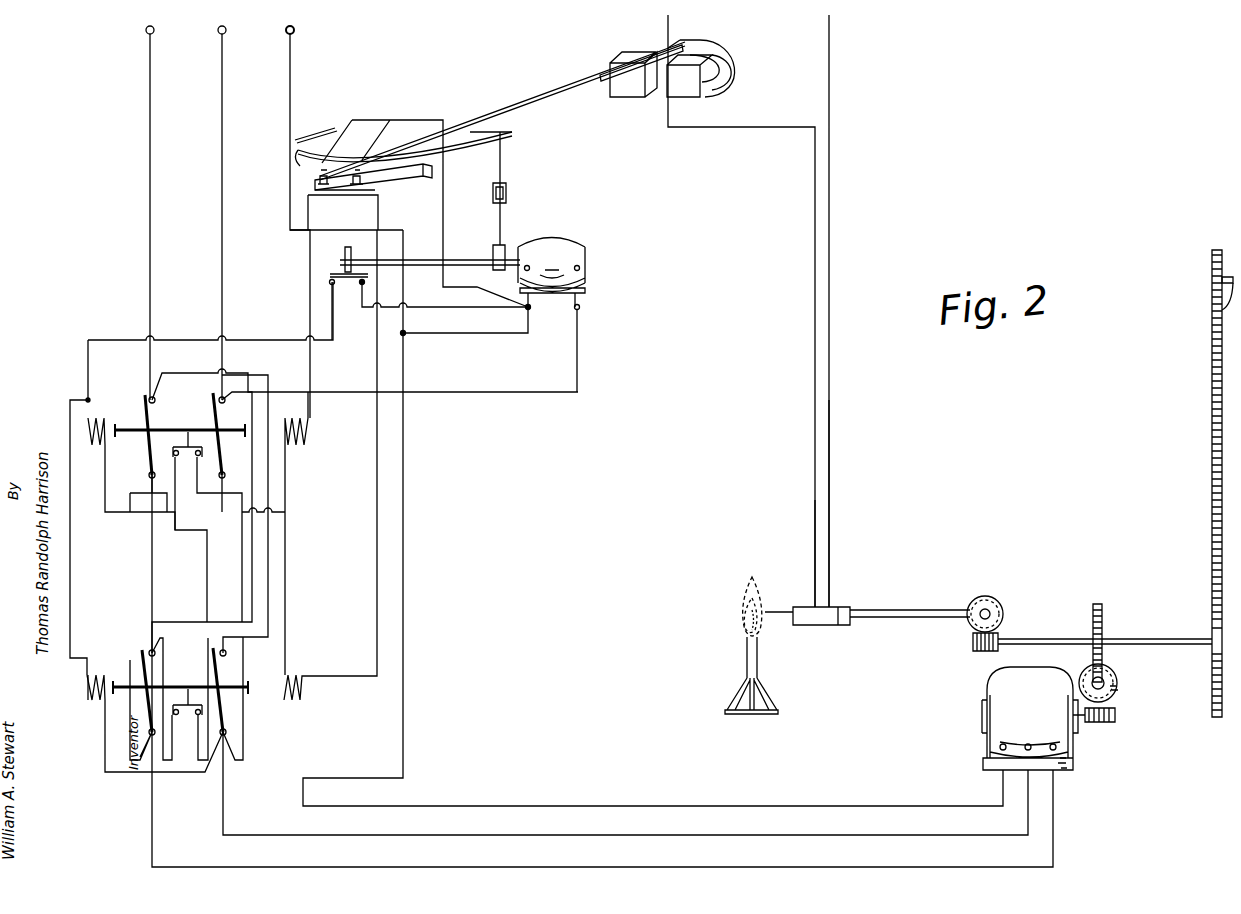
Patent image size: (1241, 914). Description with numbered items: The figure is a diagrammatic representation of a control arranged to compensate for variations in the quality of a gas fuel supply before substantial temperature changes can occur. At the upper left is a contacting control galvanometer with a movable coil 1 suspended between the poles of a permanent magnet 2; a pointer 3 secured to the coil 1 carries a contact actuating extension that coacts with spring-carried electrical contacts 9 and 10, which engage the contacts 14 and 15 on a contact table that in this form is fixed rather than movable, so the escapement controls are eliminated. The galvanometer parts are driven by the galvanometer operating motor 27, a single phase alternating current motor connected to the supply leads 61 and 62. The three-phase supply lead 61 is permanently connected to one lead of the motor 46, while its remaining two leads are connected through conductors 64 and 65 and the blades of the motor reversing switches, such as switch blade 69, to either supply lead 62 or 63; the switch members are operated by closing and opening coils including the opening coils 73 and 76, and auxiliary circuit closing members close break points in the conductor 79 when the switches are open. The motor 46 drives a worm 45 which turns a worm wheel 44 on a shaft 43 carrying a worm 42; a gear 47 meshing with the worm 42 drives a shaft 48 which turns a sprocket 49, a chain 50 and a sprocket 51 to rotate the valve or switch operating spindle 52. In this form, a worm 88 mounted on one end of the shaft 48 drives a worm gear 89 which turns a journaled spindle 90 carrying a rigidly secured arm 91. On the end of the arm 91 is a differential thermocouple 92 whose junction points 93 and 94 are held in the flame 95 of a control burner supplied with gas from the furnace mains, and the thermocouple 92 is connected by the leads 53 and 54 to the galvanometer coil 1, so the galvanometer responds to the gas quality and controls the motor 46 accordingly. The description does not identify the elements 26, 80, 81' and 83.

The movable coil 1 is at (657, 46).
The permanent magnet 2 is at (744, 44).
The pointer 3 is at (528, 102).
The electrical contact 9 is at (307, 184).
The electrical contact 10 is at (398, 188).
The contact 14 is at (308, 200).
The contact 15 is at (357, 195).
The rod 26 is at (452, 267).
The galvanometer operating motor 27 is at (558, 246).
The worm 42 is at (1116, 676).
The shaft 43 is at (1084, 666).
The worm wheel 44 is at (1120, 684).
The worm 45 is at (1119, 720).
The motor 46 is at (986, 700).
The gear 47 is at (1096, 604).
The shaft 48 is at (1152, 632).
The sprocket 49 is at (1212, 600).
The chain 50 is at (1212, 448).
The sprocket 51 is at (1212, 286).
The valve or switch operating spindle 52 is at (1214, 320).
The conductor 53 is at (836, 486).
The conductor 54 is at (814, 542).
The supply lead 61 is at (294, 105).
The supply lead 62 is at (222, 273).
The supply lead 63 is at (147, 263).
The conductor 64 is at (228, 812).
The conductor 65 is at (185, 373).
The switch blade 69 is at (148, 414).
The opening coil 73 is at (88, 702).
The opening coil 76 is at (70, 432).
The conductor 79 is at (149, 484).
The wire 80 is at (376, 459).
The frame plate 81' is at (411, 196).
The wire 83 is at (88, 367).
The worm 88 is at (968, 644).
The worm gear 89 is at (1000, 600).
The spindle 90 is at (1004, 615).
The arm 91 is at (916, 608).
The differential thermocouple 92 is at (782, 600).
The junction point 93 is at (748, 628).
The junction point 94 is at (748, 619).
The flame 95 is at (744, 608).